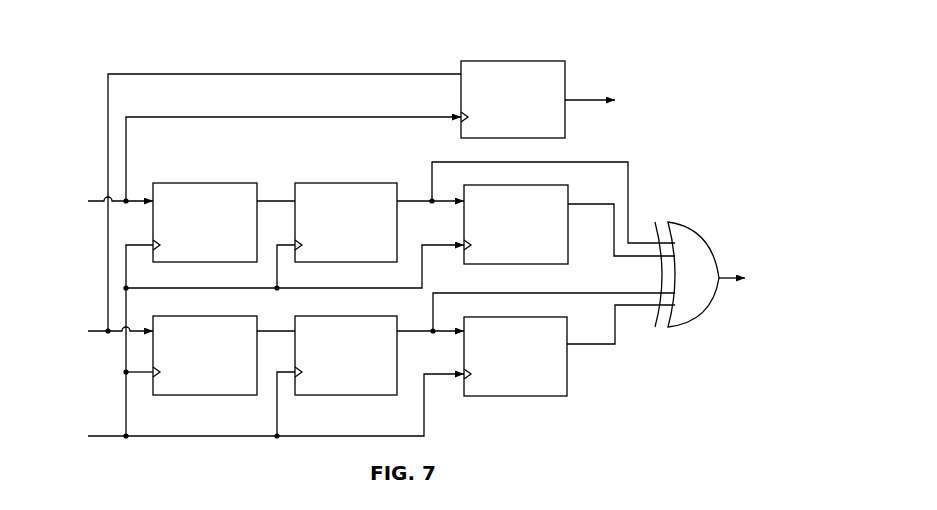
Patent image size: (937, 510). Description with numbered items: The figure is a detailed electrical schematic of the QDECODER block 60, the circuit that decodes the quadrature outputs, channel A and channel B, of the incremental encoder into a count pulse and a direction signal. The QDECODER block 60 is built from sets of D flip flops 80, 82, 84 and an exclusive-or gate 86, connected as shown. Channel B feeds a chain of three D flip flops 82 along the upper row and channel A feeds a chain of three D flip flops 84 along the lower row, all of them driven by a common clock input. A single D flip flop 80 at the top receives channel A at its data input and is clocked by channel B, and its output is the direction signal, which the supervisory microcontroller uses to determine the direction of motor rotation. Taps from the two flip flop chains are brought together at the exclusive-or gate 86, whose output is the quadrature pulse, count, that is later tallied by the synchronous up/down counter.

The QDECODER block 60 is at (109, 42).
The D flip flop 80 is at (505, 60).
The D flip flops 82 is at (197, 183).
The D flip flops 84 is at (197, 316).
The exclusive-or gate 86 is at (693, 226).